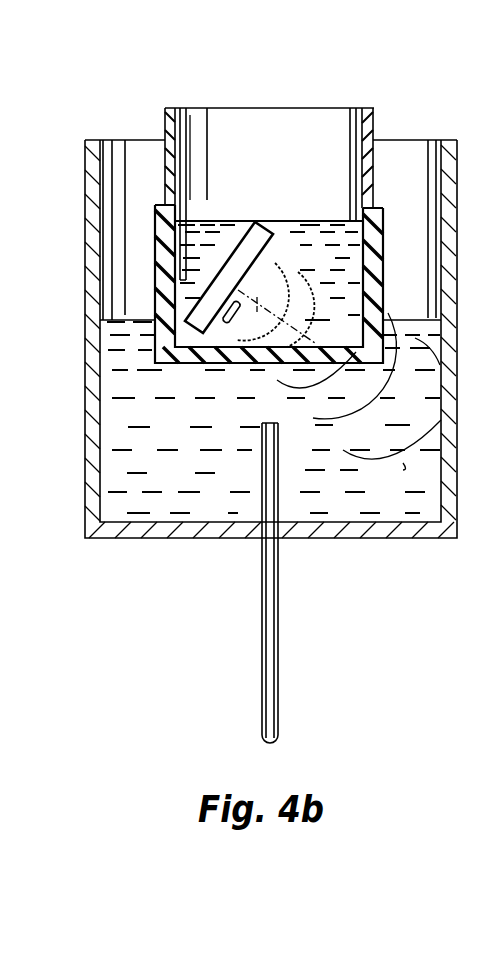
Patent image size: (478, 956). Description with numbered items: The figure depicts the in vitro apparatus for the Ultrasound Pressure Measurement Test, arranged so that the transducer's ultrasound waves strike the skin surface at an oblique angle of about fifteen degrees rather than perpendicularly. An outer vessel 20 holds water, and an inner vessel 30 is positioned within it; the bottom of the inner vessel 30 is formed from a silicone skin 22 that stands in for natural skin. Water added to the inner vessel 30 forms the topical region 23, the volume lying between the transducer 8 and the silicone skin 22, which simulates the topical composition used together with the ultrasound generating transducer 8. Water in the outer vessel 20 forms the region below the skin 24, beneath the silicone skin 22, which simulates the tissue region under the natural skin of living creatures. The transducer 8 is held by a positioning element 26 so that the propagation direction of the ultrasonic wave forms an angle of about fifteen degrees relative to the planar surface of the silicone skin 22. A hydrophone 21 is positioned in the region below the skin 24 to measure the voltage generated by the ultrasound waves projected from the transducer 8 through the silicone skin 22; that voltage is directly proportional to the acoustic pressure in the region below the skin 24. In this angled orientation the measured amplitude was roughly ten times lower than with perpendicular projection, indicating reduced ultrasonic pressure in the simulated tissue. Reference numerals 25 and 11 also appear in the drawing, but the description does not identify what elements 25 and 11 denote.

The outer vessel 20 is at (75, 165).
The inner vessel 30 is at (157, 110).
The inner tube 25 is at (247, 140).
The positioning element 26 is at (202, 257).
The transducer 8 is at (266, 218).
The topical region 23 is at (382, 255).
The silicone skin 22 is at (233, 350).
The region below the skin 24 is at (157, 473).
The swing path 11 is at (403, 463).
The hydrophone 21 is at (262, 663).